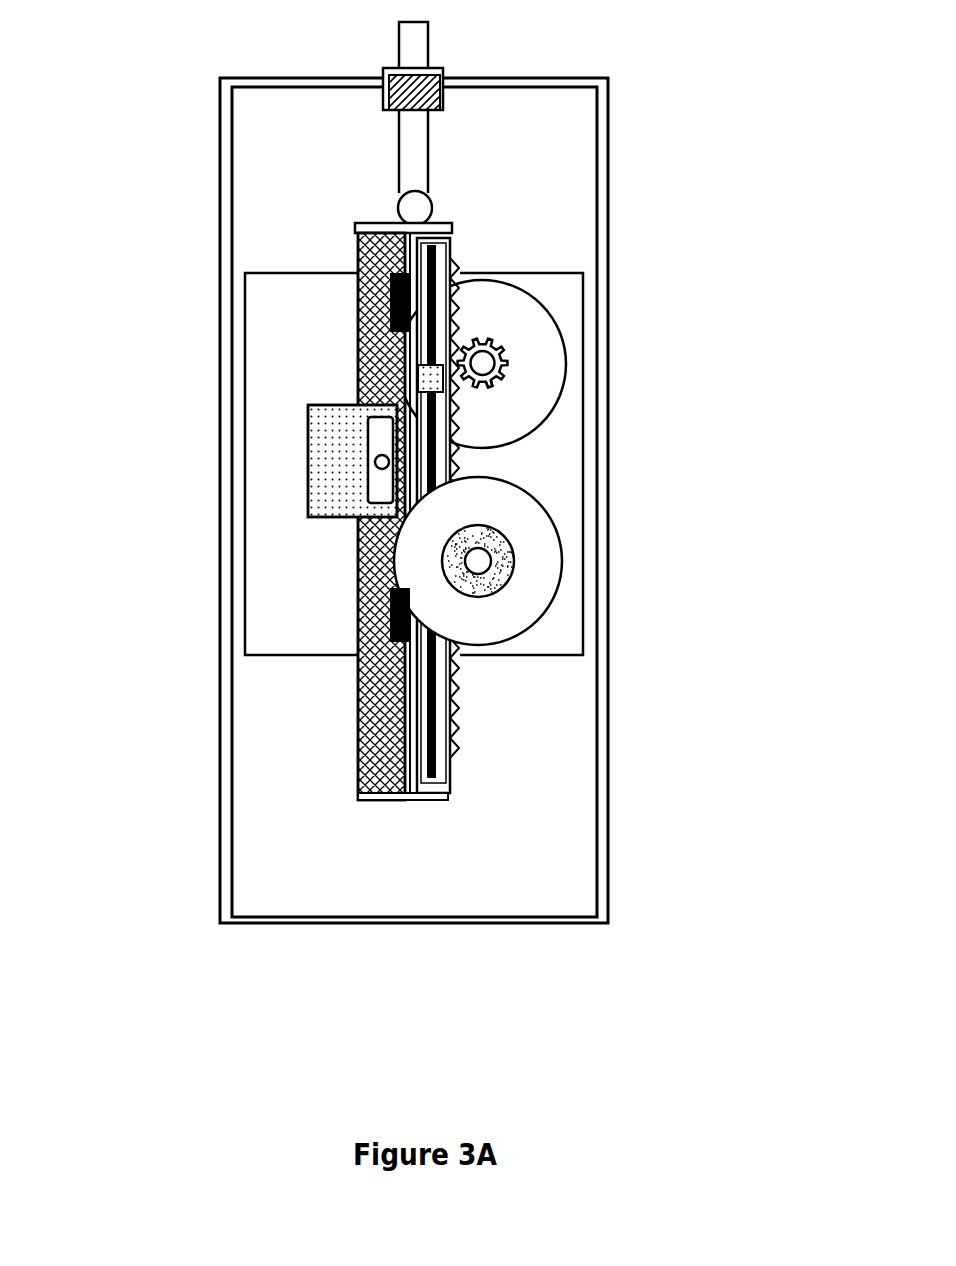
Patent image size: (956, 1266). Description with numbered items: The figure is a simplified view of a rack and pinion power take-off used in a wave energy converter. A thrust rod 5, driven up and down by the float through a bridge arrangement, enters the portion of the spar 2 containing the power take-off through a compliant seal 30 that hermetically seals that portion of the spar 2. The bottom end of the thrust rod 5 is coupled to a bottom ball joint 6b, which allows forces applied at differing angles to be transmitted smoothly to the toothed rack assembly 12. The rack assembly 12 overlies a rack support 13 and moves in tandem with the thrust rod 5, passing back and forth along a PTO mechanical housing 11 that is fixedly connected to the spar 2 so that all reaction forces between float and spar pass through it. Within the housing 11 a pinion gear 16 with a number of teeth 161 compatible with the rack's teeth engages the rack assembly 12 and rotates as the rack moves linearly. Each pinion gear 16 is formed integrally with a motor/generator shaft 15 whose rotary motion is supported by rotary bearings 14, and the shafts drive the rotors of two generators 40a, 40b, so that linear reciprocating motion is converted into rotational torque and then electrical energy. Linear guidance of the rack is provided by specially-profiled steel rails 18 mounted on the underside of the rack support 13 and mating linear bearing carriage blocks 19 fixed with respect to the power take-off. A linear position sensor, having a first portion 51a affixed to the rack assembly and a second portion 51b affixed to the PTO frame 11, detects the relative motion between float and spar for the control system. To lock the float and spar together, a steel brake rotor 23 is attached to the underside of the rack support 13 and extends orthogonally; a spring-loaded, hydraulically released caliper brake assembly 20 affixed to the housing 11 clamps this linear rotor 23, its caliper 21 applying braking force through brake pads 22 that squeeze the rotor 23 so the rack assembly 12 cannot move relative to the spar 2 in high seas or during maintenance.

The spar 2 is at (610, 347).
The thrust rod 5 is at (413, 55).
The bottom ball joint 6b is at (413, 209).
The PTO mechanical housing 11 is at (515, 335).
The rack assembly 12 is at (457, 747).
The rack support 13 is at (435, 795).
The rotary bearings 14 is at (497, 587).
The motor/generator shaft 15 is at (482, 363).
The pinion gear 16 is at (510, 365).
The teeth 161 is at (487, 388).
The steel rails 18 is at (397, 703).
The linear bearing carriage blocks 19 is at (388, 638).
The caliper brake assembly 20 is at (317, 518).
The caliper 21 is at (375, 461).
The brake pads 22 is at (378, 435).
The brake rotor 23 is at (358, 800).
The compliant seal 30 is at (418, 95).
The generator 40a is at (550, 320).
The generator 40b is at (548, 505).
The first portion of linear position sensor 51a is at (418, 378).
The second portion of linear position sensor 51b is at (428, 738).